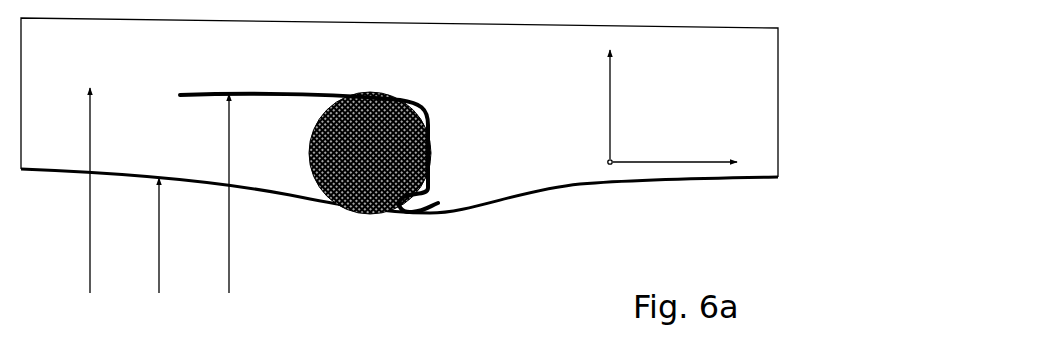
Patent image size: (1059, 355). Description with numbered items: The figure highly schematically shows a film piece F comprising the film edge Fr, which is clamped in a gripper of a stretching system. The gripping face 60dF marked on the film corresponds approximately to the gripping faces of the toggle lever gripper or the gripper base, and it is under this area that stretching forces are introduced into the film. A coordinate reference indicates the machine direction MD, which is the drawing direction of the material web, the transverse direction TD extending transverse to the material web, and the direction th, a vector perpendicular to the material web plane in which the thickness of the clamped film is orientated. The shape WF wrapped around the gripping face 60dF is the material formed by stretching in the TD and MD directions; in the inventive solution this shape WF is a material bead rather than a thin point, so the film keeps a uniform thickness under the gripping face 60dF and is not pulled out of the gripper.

The film piece F is at (87, 202).
The film edge Fr is at (155, 247).
The material bead WF is at (309, 205).
The gripping face 60dF is at (371, 155).
The transverse direction TD is at (623, 99).
The machine direction MD is at (675, 152).
The thickness direction th is at (621, 153).